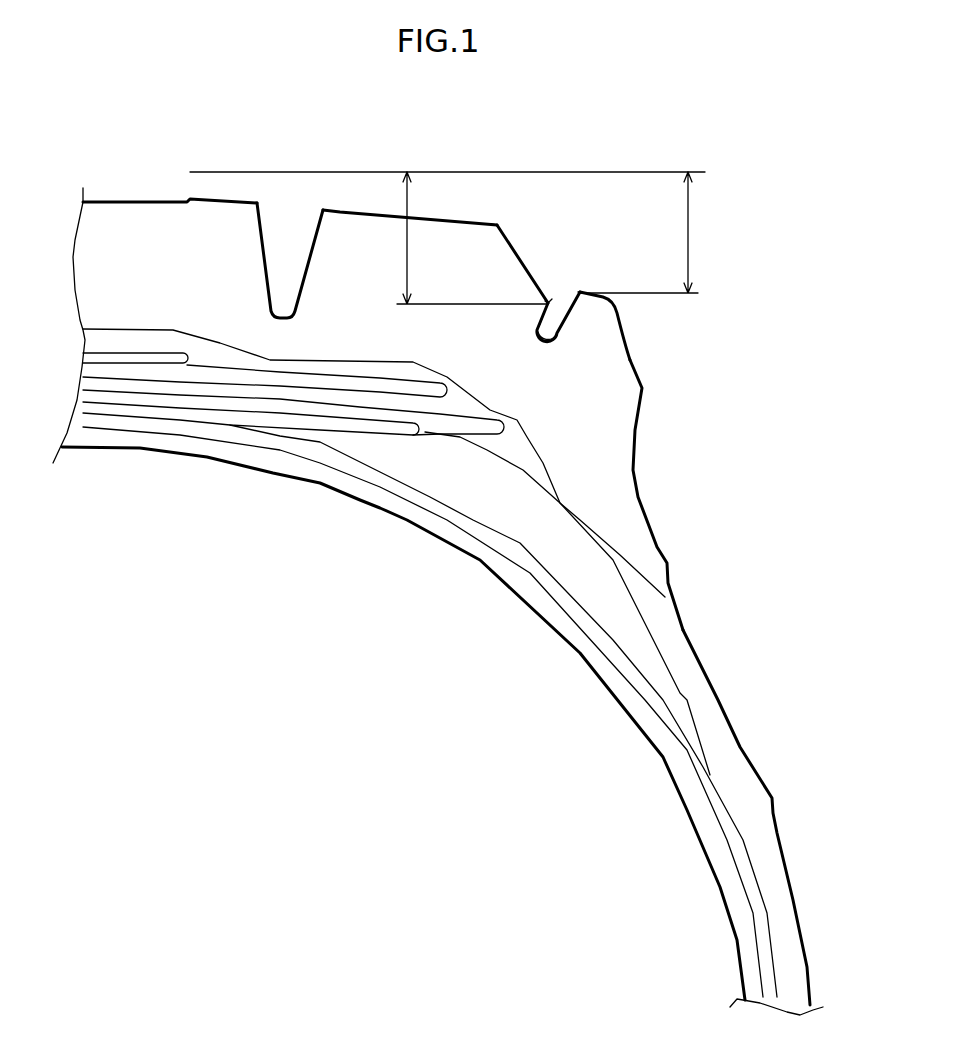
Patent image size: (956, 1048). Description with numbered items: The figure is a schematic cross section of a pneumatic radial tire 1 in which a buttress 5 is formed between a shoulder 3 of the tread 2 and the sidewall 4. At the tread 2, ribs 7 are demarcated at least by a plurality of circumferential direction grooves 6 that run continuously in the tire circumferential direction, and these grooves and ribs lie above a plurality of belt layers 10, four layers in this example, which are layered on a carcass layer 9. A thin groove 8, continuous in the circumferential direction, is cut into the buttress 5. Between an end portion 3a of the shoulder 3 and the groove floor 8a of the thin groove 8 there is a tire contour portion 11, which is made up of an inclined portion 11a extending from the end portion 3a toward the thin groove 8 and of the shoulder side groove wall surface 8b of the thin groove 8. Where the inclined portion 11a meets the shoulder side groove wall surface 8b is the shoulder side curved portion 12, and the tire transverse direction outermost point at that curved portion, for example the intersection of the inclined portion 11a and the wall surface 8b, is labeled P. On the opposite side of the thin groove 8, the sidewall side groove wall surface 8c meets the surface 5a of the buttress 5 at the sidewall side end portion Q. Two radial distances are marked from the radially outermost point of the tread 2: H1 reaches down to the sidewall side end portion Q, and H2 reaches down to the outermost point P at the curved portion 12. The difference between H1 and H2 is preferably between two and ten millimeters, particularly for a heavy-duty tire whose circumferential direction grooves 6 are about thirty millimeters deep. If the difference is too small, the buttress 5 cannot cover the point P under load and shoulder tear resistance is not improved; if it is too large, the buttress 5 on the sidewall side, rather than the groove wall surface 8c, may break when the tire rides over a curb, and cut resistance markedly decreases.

The pneumatic radial tire 1 is at (100, 108).
The tread 2 is at (145, 184).
The shoulder 3 is at (463, 184).
The end portion of the shoulder 3a is at (498, 225).
The sidewall 4 is at (792, 824).
The buttress 5 is at (664, 483).
The surface of the buttress 5a is at (622, 330).
The circumferential direction grooves 6 is at (292, 233).
The ribs 7 is at (118, 223).
The thin groove 8 is at (558, 313).
The groove floor of the thin groove 8a is at (547, 340).
The shoulder side groove wall surface 8b is at (537, 320).
The sidewall side groove wall surface 8c is at (570, 317).
The carcass layer 9 is at (220, 435).
The belt layers 10 is at (127, 360).
The tire contour portion 11 is at (526, 234).
The inclined portion 11a is at (510, 247).
The shoulder side curved portion 12 is at (550, 293).
The tire radial direction distance H1 is at (639, 232).
The tire radial direction distance H2 is at (460, 238).
The tire transverse direction outermost portion P is at (545, 303).
The sidewall side end portion Q is at (590, 281).